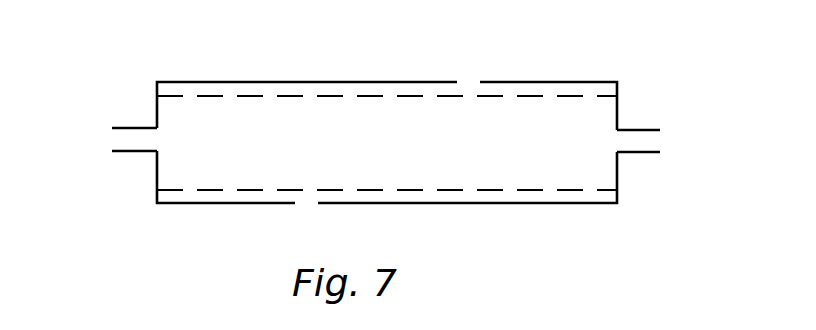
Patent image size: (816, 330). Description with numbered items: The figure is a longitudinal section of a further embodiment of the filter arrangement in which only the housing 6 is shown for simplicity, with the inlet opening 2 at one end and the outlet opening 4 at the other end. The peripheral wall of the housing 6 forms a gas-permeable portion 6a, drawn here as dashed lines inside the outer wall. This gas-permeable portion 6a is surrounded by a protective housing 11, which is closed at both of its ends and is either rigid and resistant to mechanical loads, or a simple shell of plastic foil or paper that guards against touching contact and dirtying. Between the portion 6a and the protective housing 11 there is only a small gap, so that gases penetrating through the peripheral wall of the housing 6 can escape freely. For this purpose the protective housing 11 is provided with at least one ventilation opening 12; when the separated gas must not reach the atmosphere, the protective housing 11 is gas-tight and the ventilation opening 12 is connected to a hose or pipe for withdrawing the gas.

The inlet opening 2 is at (134, 135).
The outlet opening 4 is at (640, 132).
The protective housing 11 is at (262, 82).
The housing 6 is at (607, 168).
The gas-permeable portion of the housing 6a is at (393, 96).
The ventilation opening 12 is at (472, 83).